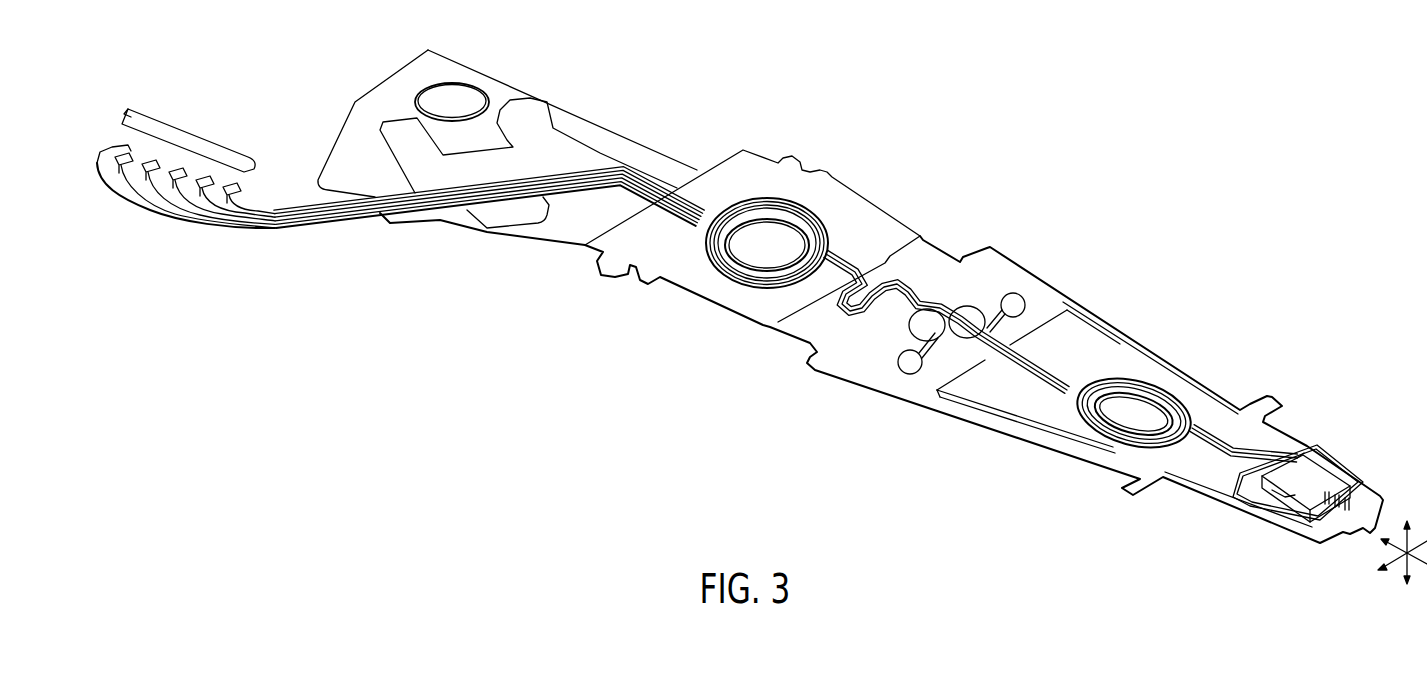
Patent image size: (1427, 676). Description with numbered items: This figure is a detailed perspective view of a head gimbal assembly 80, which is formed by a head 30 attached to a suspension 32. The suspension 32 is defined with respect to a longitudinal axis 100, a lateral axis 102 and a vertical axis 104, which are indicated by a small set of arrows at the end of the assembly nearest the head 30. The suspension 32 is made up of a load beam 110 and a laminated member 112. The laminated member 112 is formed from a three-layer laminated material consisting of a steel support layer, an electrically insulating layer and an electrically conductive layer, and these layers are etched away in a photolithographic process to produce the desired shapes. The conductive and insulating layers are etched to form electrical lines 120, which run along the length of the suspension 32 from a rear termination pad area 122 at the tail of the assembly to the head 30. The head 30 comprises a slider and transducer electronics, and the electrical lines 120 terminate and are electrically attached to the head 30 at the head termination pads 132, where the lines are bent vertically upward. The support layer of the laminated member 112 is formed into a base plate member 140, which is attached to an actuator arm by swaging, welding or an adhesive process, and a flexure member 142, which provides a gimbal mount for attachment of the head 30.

The head 30 is at (1250, 507).
The suspension 32 is at (850, 296).
The head gimbal assembly 80 is at (762, 329).
The longitudinal axis 100 is at (1404, 571).
The lateral axis 102 is at (1373, 560).
The vertical axis 104 is at (1402, 523).
The load beam 110 is at (755, 335).
The laminated member 112 is at (809, 225).
The electrical lines 120 is at (786, 314).
The rear termination pad area 122 is at (202, 142).
The head termination pads 132 is at (1302, 451).
The base plate member 140 is at (752, 259).
The flexure member 142 is at (1124, 418).